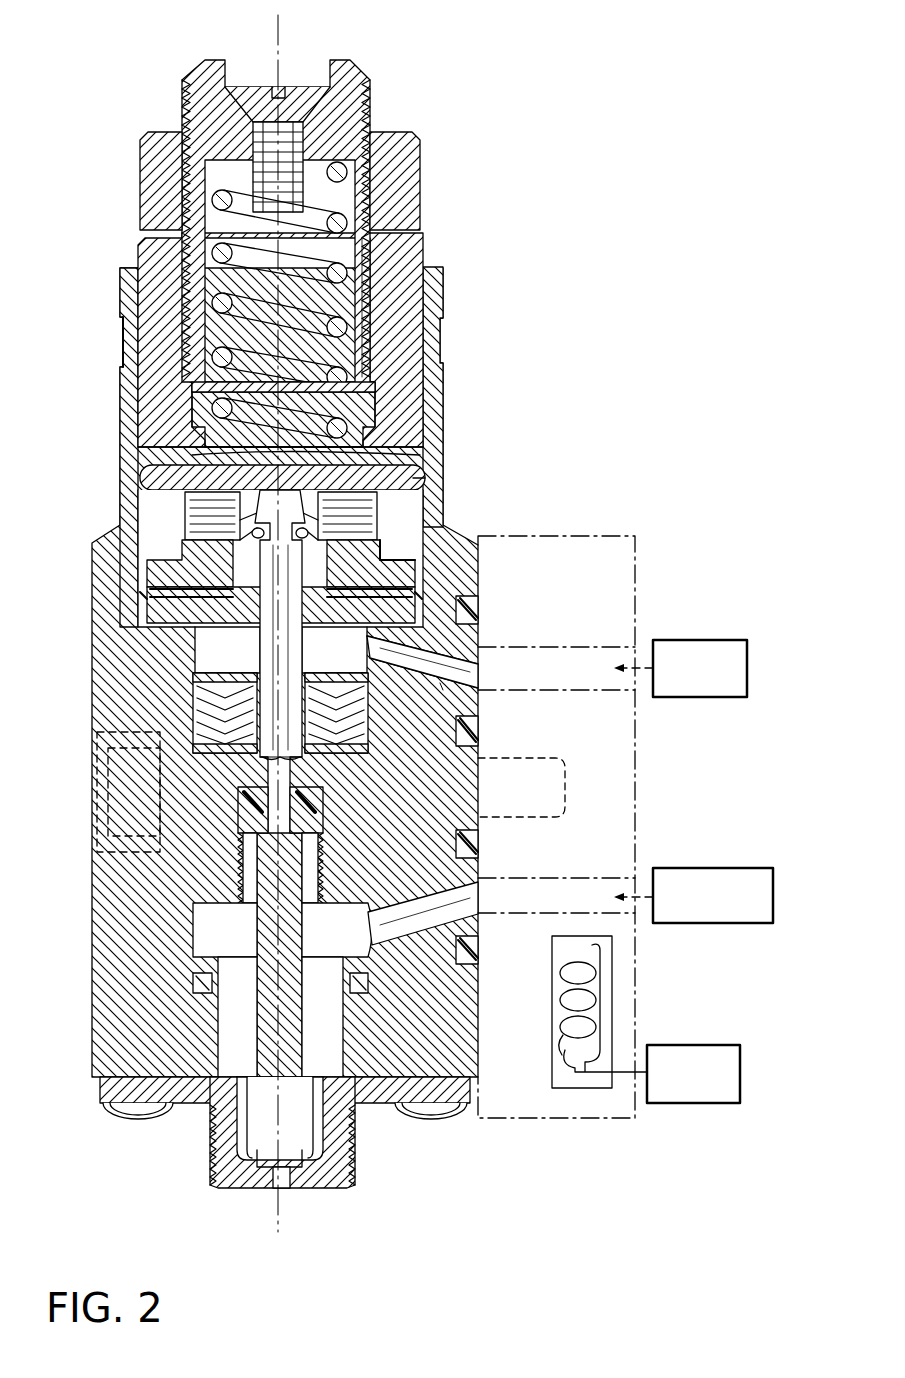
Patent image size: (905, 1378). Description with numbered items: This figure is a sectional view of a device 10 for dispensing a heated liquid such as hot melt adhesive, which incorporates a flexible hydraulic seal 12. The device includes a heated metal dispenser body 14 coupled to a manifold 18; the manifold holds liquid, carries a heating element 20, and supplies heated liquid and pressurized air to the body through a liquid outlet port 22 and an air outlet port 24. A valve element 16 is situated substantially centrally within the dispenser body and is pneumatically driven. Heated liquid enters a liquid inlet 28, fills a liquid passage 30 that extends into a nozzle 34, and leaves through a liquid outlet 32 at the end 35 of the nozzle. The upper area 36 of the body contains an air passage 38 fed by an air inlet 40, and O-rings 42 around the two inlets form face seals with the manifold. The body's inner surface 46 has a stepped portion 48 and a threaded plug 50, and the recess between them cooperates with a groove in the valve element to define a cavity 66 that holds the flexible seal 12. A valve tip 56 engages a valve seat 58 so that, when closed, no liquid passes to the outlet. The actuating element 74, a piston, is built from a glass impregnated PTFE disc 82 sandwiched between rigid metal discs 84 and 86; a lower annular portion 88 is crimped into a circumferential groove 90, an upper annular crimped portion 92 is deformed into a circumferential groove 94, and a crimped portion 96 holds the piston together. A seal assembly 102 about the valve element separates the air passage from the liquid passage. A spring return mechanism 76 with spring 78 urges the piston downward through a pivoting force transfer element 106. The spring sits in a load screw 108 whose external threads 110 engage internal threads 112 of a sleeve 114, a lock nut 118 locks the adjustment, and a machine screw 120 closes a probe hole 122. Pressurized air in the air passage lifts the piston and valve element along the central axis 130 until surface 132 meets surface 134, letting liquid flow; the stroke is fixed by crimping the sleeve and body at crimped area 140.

The device 10 is at (640, 320).
The flexible hydraulic seal 12 is at (292, 843).
The dispenser body 14 is at (446, 380).
The valve element 16 is at (305, 920).
The manifold 18 is at (625, 823).
The heating element 20 is at (605, 1000).
The liquid outlet port 22 is at (572, 905).
The air outlet port 24 is at (560, 680).
The liquid inlet 28 is at (423, 925).
The liquid passage 30 is at (236, 946).
The liquid outlet 32 is at (285, 1176).
The nozzle 34 is at (280, 1152).
The end of the nozzle 35 is at (250, 1190).
The upper area 36 is at (132, 637).
The air passage 38 is at (480, 641).
The air inlet 40 is at (440, 686).
The O-rings 42 is at (480, 608).
The inner surface 46 is at (182, 628).
The stepped portion 48 is at (258, 768).
The plug 50 is at (326, 860).
The valve tip 56 is at (352, 1172).
The valve seat 58 is at (258, 1150).
The cavity 66 is at (240, 825).
The actuating element 74 is at (230, 565).
The spring return mechanism 76 is at (336, 222).
The spring 78 is at (232, 246).
The glass impregnated PTFE disc 82 is at (150, 594).
The rigid metal disc 84 is at (168, 568).
The rigid metal disc 86 is at (168, 612).
The lower annular portion 88 is at (227, 650).
The circumferential groove 90 is at (334, 650).
The upper annular crimped portion 92 is at (185, 515).
The circumferential groove 94 is at (370, 548).
The crimped portion 96 is at (248, 528).
The seal assembly 102 is at (192, 708).
The pivoting force transfer element 106 is at (418, 483).
The load screw 108 is at (352, 92).
The external threads 110 is at (372, 130).
The internal threads 112 is at (374, 302).
The sleeve 114 is at (170, 252).
The lock nut 118 is at (422, 172).
The machine screw 120 is at (240, 112).
The hole 122 is at (262, 128).
The central axis 130 is at (282, 42).
The surface 132 is at (420, 450).
The surface 134 is at (398, 470).
The crimped area 140 is at (112, 315).